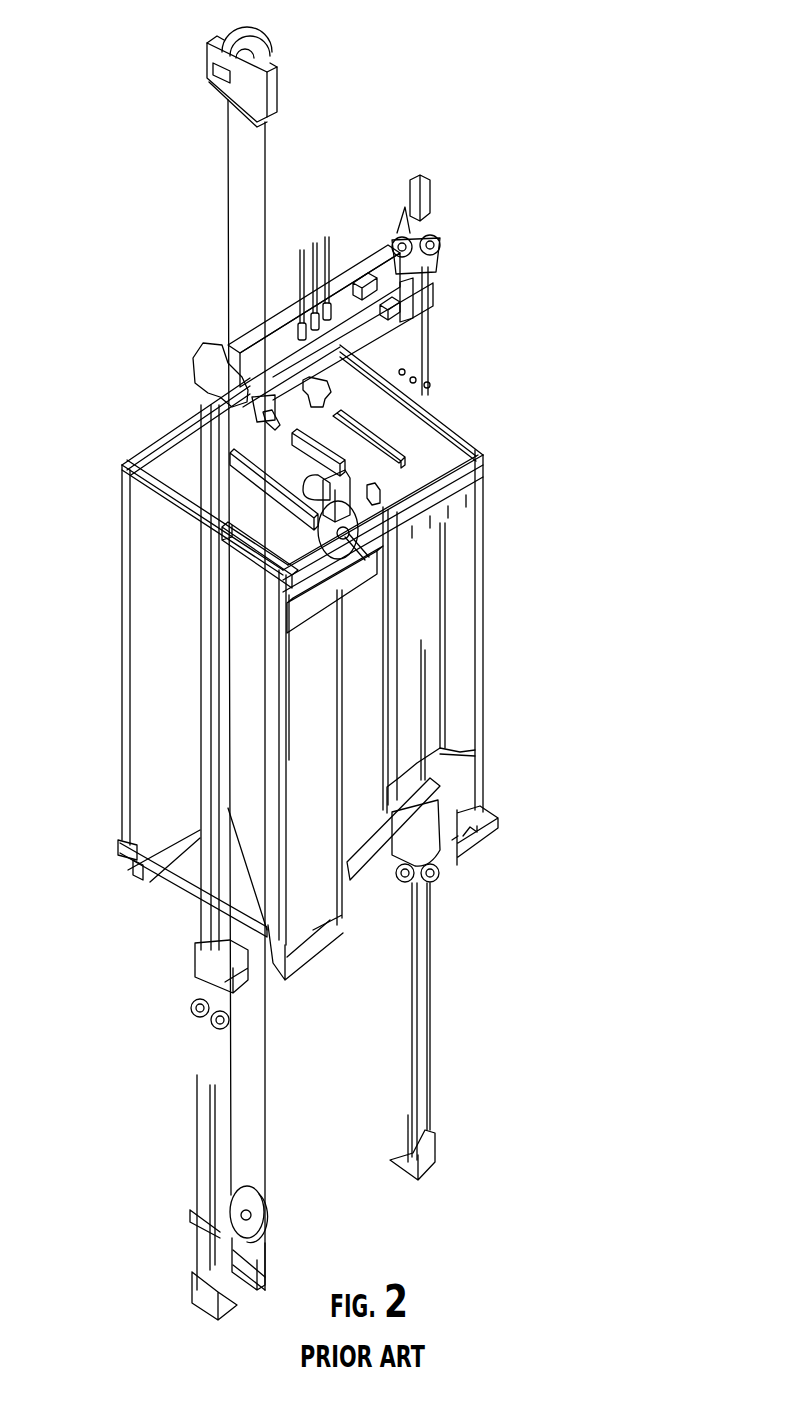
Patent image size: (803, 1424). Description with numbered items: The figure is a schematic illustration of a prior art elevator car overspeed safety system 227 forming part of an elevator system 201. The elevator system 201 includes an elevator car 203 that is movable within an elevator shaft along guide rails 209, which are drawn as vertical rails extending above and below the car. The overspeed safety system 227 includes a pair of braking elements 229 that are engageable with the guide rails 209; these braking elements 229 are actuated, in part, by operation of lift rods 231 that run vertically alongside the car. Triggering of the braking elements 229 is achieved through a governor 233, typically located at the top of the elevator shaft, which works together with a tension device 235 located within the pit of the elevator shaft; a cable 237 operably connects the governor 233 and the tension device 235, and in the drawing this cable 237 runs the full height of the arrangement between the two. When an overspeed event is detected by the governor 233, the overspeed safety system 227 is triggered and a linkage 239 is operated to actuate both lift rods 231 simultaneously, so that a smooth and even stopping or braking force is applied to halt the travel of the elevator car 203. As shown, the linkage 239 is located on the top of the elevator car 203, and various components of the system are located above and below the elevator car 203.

The elevator system 201 is at (597, 213).
The elevator car 203 is at (468, 665).
The guide rails 209 is at (205, 1160).
The overspeed safety system 227 is at (160, 412).
The braking elements 229 is at (208, 980).
The lift rods 231 is at (208, 665).
The governor 233 is at (207, 52).
The tension device 235 is at (260, 1250).
The cable 237 is at (267, 1100).
The linkage 239 is at (383, 335).